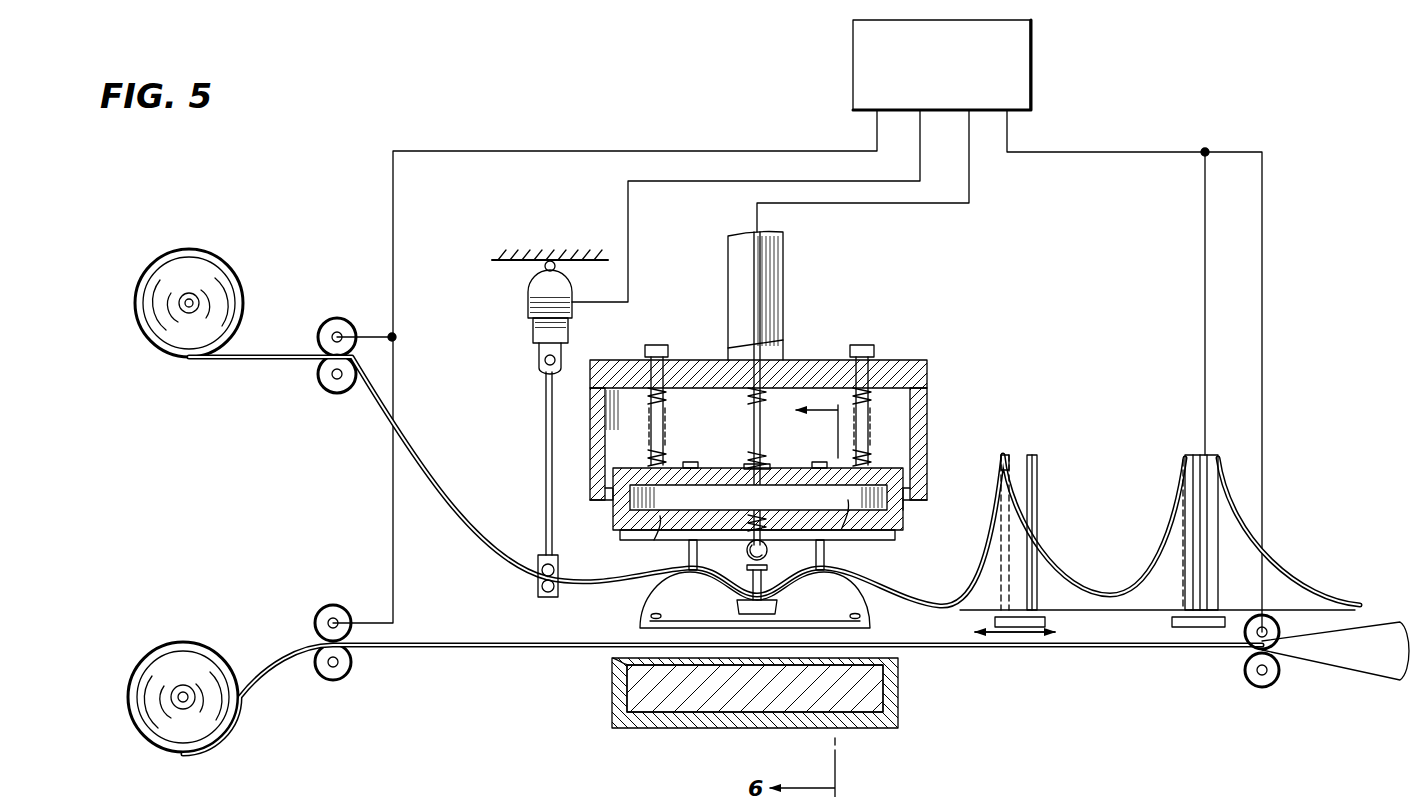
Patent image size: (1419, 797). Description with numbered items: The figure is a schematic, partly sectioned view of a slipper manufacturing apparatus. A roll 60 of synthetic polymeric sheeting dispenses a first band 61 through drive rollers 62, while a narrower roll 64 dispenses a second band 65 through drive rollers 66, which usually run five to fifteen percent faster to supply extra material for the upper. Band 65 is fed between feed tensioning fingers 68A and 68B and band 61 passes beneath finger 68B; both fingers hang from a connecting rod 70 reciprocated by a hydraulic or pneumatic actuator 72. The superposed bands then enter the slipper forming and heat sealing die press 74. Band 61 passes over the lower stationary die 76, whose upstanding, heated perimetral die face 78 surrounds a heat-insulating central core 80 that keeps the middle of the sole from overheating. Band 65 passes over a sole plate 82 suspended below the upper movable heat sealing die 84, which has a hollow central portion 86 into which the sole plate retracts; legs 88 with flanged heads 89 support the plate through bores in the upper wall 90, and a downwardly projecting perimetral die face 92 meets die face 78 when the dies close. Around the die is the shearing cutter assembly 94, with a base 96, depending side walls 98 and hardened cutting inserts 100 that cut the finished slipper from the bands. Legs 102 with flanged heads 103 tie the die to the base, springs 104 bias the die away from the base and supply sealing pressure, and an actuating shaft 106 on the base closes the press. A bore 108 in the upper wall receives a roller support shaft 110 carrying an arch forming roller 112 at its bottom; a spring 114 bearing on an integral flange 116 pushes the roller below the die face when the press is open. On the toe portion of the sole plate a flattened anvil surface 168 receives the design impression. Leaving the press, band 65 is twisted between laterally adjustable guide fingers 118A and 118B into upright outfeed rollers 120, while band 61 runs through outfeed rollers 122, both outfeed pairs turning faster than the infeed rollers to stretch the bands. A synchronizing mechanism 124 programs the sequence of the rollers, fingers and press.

The roll 60 is at (196, 660).
The first band 61 is at (276, 640).
The drive rollers 62 is at (346, 610).
The roll 64 is at (226, 288).
The second band 65 is at (286, 330).
The drive rollers 66 is at (352, 326).
The feed tensioning finger 68A is at (558, 558).
The feed tensioning finger 68B is at (558, 596).
The connecting rod 70 is at (545, 474).
The actuator 72 is at (536, 296).
The slipper forming and heat sealing die press 74 is at (840, 298).
The lower stationary die 76 is at (755, 688).
The perimetral die face 78 is at (614, 658).
The heat-insulating central core 80 is at (753, 691).
The sole plate 82 is at (860, 604).
The upper movable heat sealing die 84 is at (842, 546).
The hollow central portion 86 is at (650, 548).
The legs 88 is at (700, 556).
The flanged heads 89 is at (699, 462).
The upper wall 90 is at (784, 480).
The perimetral die face 92 is at (900, 540).
The shearing cutter assembly 94 is at (791, 407).
The base 96 is at (806, 372).
The side walls 98 is at (932, 482).
The hardened cutting inserts 100 is at (910, 505).
The legs 102 is at (652, 436).
The flanged heads 103 is at (672, 326).
The springs 104 is at (646, 370).
The actuating shaft 106 is at (740, 268).
The bore 108 is at (744, 486).
The roller support shaft 110 is at (762, 446).
The arch forming roller 112 is at (768, 552).
The spring 114 is at (748, 402).
The flange 116 is at (754, 466).
The guide finger 118A is at (1008, 455).
The guide finger 118B is at (1040, 480).
The outfeed rollers 120 is at (1186, 470).
The outfeed rollers 122 is at (1242, 670).
The synchronizing mechanism 124 is at (1033, 62).
The anvil surface 168 is at (780, 606).